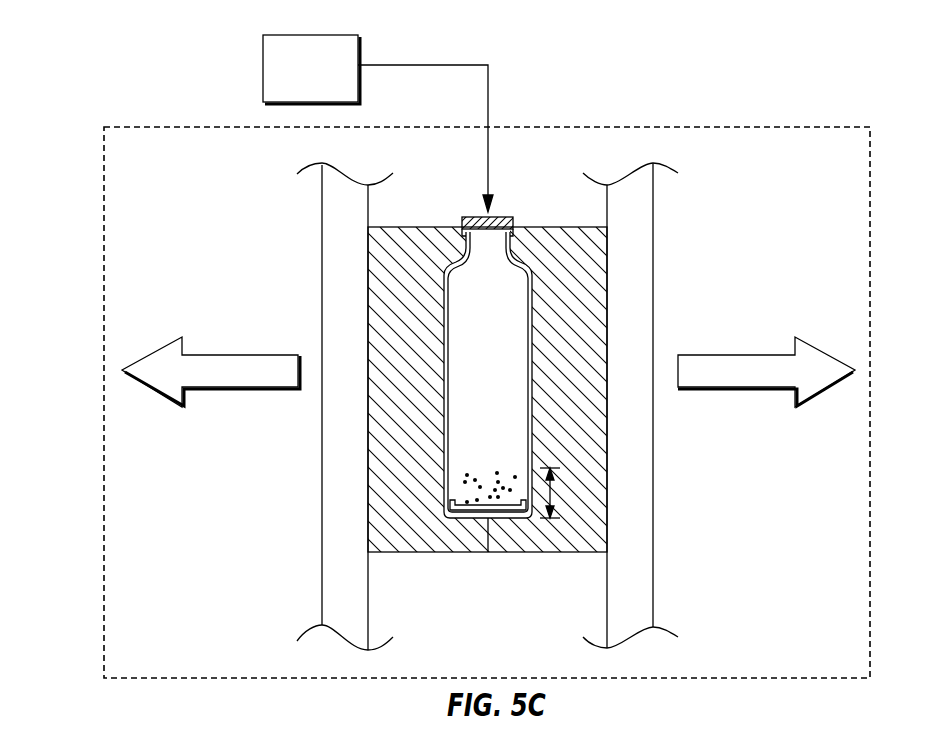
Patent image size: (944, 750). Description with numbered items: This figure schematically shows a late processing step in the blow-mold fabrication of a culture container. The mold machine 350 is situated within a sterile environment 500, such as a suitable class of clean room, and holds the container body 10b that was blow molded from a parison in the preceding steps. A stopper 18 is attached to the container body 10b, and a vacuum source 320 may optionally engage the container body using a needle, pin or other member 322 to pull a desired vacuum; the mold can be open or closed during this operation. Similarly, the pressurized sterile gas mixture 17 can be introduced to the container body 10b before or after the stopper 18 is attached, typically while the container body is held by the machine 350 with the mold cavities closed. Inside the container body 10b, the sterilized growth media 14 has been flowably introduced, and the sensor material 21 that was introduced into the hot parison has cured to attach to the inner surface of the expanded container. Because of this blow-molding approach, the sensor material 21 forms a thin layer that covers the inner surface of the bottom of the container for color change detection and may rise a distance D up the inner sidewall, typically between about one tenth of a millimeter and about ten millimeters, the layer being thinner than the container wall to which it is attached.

The sterile environment 500 is at (770, 127).
The mold machine 350 is at (80, 197).
The vacuum source 320 is at (262, 78).
The needle, pin or other member 322 is at (484, 190).
The stopper 18 is at (501, 214).
The pressurized sterile gas mixture 17 is at (505, 290).
The sensor material 21 is at (470, 510).
The sterilized growth media 14 is at (513, 470).
The container body 10b is at (465, 463).
The distance D is at (552, 492).